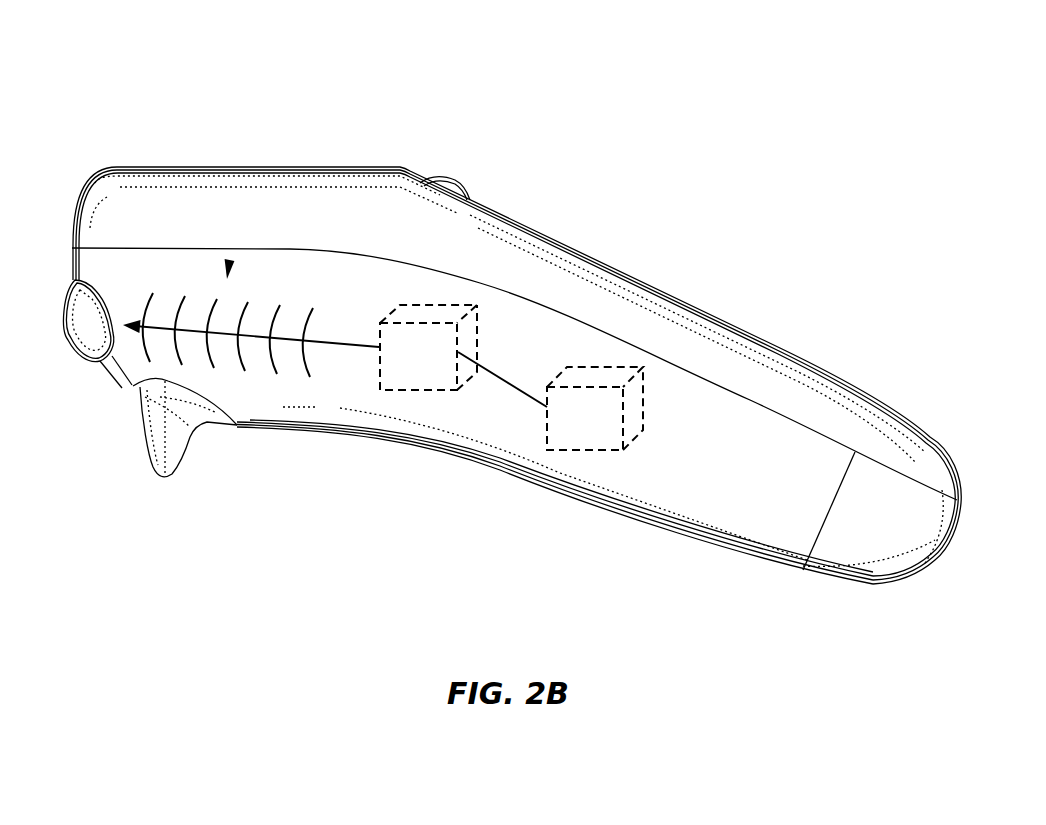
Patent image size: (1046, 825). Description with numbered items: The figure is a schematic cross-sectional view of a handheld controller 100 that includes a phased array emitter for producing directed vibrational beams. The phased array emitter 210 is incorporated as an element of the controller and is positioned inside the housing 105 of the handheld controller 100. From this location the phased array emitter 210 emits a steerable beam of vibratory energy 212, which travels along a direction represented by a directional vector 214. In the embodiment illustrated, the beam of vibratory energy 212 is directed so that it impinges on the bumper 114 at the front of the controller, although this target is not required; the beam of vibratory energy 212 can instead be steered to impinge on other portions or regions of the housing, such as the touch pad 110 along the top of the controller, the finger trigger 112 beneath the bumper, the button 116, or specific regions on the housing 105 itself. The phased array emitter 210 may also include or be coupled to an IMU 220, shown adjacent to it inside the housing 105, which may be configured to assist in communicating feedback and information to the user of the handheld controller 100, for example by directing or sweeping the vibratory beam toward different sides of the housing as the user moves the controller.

The handheld controller 100 is at (419, 100).
The housing 105 is at (718, 320).
The touch pad 110 is at (245, 167).
The finger trigger 112 is at (178, 468).
The bumper 114 is at (82, 347).
The button 116 is at (455, 182).
The phased array emitter 210 is at (420, 391).
The beam of vibratory energy 212 is at (230, 260).
The directional vector 214 is at (323, 345).
The IMU 220 is at (590, 451).